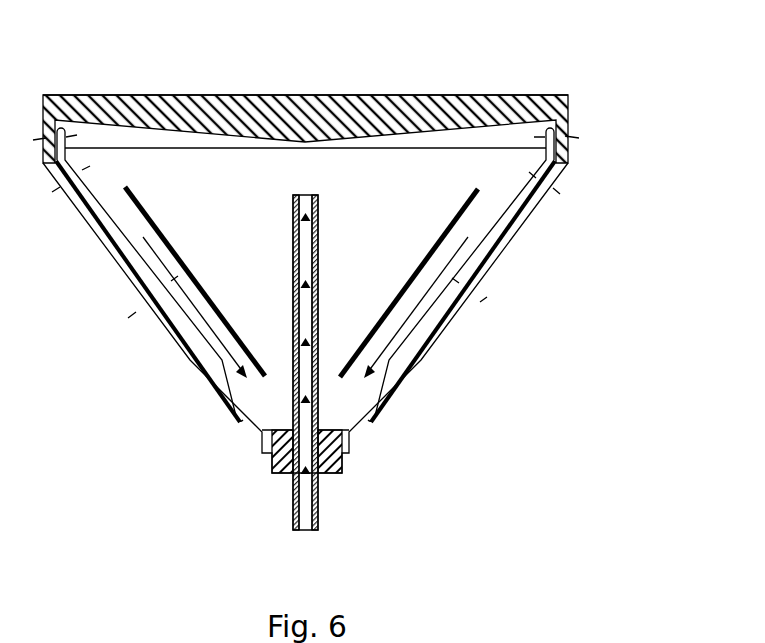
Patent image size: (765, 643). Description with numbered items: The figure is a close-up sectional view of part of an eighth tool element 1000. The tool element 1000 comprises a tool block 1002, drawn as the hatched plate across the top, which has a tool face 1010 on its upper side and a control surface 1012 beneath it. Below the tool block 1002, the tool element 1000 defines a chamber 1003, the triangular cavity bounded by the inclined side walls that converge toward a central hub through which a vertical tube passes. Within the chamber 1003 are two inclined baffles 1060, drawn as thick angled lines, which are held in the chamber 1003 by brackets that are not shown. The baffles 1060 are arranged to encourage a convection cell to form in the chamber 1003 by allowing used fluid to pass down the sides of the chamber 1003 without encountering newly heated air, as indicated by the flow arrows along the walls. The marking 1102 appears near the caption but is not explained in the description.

The tool element 1000 is at (572, 247).
The tool block 1002 is at (410, 96).
The tool face 1010 is at (205, 120).
The control surface 1012 is at (205, 120).
The chamber 1003 is at (262, 272).
The baffles 1060 is at (404, 292).
The sheet label 1102 is at (424, 632).